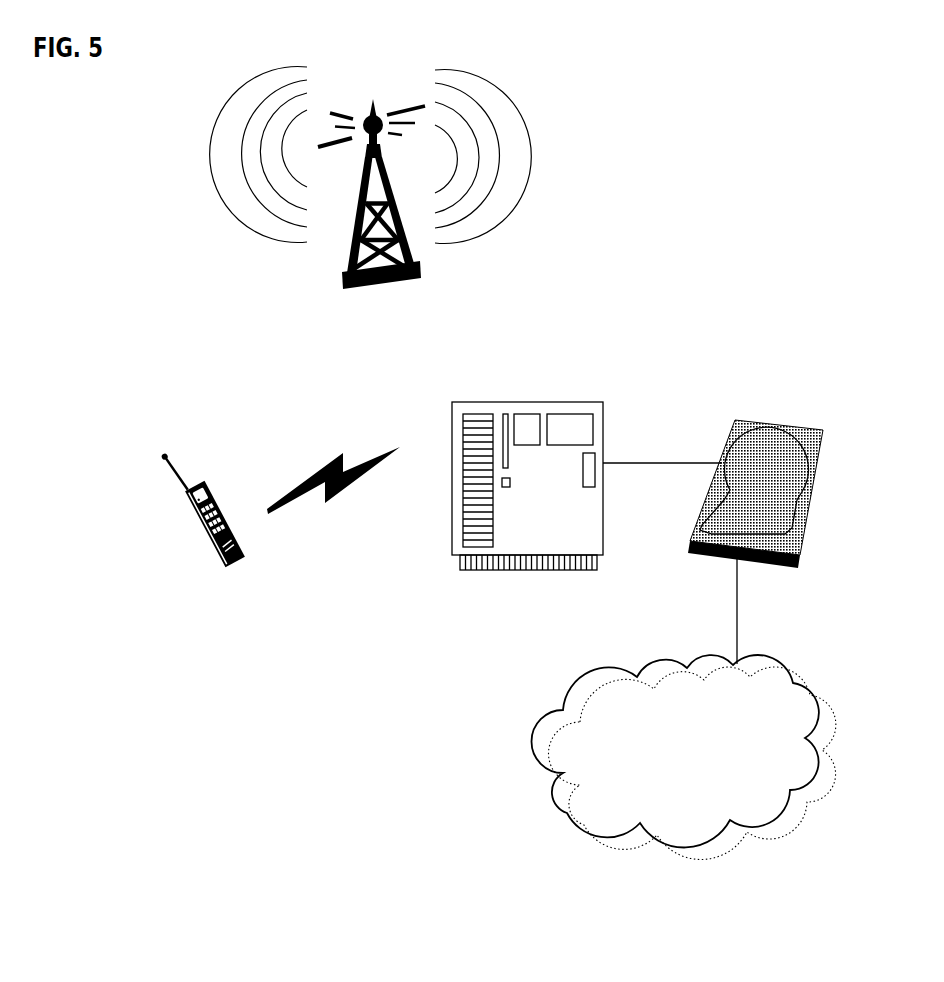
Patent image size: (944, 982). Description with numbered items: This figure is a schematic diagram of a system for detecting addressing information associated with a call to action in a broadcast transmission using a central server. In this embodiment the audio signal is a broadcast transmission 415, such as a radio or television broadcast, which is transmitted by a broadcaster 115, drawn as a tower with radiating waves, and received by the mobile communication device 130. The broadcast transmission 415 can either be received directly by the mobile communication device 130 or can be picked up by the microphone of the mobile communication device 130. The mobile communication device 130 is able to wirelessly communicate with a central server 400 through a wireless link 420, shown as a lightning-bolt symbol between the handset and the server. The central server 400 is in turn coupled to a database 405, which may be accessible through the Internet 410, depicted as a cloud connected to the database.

The broadcaster 115 is at (385, 77).
The broadcast transmission 415 is at (198, 145).
The mobile communication device 130 is at (148, 495).
The wireless link 420 is at (316, 462).
The central server 400 is at (555, 397).
The database 405 is at (805, 412).
The Internet 410 is at (700, 753).